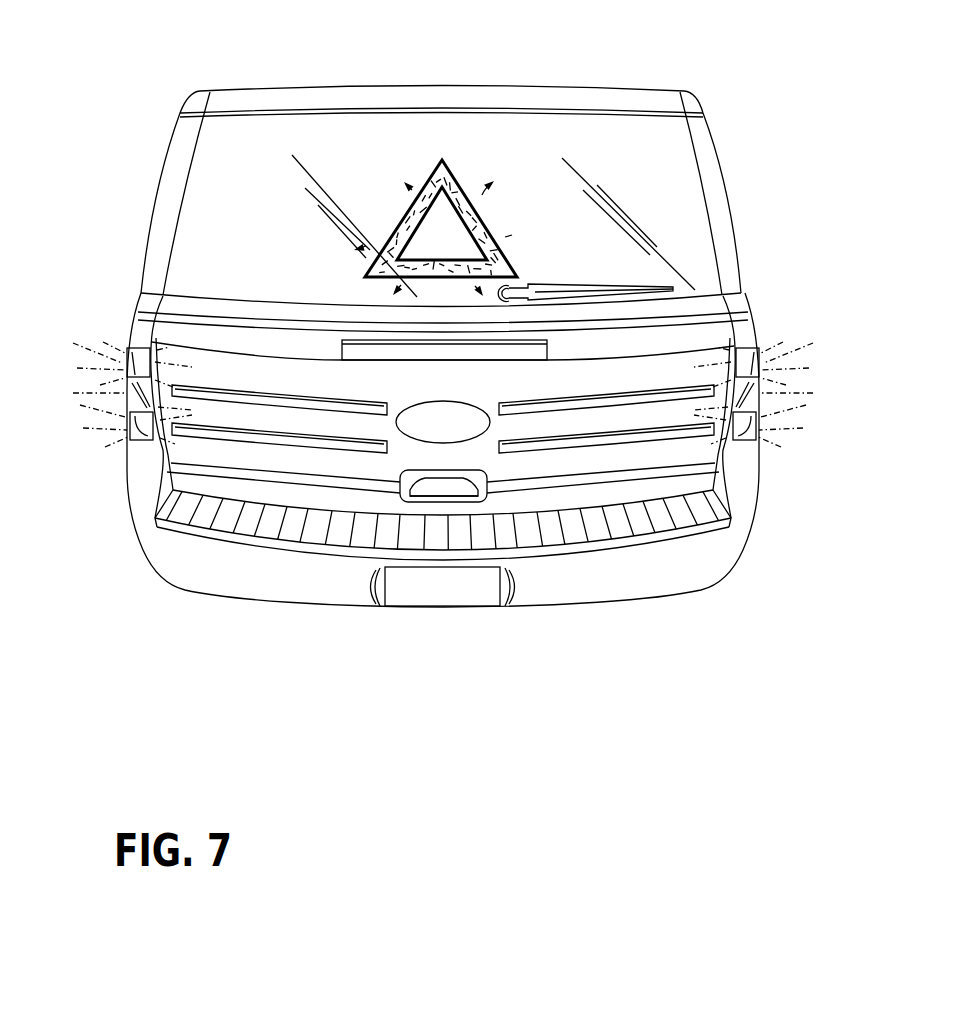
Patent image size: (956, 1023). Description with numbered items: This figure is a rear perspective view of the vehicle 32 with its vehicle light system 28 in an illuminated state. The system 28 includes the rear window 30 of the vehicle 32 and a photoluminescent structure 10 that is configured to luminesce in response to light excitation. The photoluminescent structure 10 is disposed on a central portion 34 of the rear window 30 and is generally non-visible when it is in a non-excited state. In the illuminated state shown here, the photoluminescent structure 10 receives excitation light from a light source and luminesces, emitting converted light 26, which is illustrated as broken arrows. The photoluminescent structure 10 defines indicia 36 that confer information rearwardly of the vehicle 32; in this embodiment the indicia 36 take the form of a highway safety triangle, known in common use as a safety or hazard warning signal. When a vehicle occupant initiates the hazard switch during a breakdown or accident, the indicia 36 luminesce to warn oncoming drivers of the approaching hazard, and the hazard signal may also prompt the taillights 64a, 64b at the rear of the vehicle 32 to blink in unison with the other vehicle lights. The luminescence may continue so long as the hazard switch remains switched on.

The photoluminescent structure 10 is at (432, 220).
The converted light 26 is at (536, 228).
The vehicle light system 28 is at (789, 154).
The window 30 is at (673, 225).
The vehicle 32 is at (714, 81).
The central portion 34 is at (457, 150).
The indicia 36 is at (433, 180).
The taillight 64a is at (140, 402).
The taillight 64b is at (745, 403).